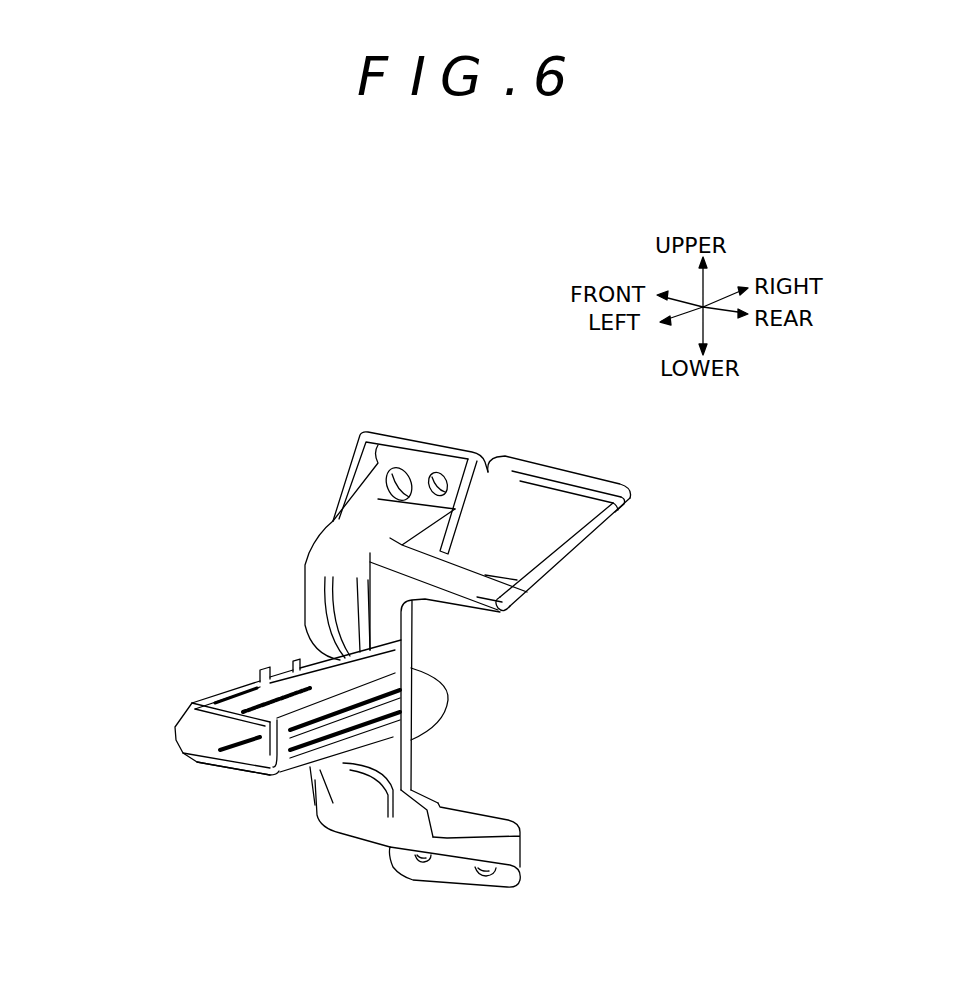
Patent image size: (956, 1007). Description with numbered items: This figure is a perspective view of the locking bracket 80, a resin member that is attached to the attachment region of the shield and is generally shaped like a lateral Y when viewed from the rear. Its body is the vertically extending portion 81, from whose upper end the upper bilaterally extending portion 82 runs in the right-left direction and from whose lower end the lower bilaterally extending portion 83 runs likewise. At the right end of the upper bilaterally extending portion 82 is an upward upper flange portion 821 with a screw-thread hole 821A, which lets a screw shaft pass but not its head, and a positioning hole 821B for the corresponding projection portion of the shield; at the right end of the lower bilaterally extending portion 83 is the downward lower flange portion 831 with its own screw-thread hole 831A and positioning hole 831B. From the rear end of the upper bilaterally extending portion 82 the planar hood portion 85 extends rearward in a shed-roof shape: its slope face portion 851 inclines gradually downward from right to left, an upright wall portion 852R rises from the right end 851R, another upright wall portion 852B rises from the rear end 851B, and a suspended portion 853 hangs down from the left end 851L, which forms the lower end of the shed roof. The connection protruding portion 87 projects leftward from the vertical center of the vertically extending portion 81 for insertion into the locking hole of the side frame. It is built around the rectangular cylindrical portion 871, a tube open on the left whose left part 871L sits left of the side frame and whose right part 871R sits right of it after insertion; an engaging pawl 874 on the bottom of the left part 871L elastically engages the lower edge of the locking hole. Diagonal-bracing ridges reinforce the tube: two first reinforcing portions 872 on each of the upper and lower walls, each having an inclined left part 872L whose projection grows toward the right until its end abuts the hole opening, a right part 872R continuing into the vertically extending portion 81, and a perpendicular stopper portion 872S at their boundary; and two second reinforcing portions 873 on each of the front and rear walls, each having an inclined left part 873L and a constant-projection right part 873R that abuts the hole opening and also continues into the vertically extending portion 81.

The locking bracket 80 is at (541, 681).
The vertically extending portion 81 is at (362, 795).
The bilaterally extending portion 82 is at (337, 540).
The upper flange portion 821 is at (415, 460).
The screw-thread hole 821A is at (448, 457).
The positioning hole 821B is at (392, 458).
The bilaterally extending portion 83 is at (477, 850).
The lower flange portion 831 is at (447, 870).
The screw-thread hole 831A is at (423, 865).
The positioning hole 831B is at (493, 885).
The hood portion 85 is at (585, 548).
The slope face portion 851 is at (567, 522).
The right end of the slope face portion 851R is at (533, 480).
The left end of the slope face portion 851L is at (530, 593).
The rear end of the slope face portion 851B is at (628, 520).
The upright wall portion 852R is at (571, 480).
The upright wall portion 852B is at (632, 499).
The suspended portion 853 is at (508, 614).
The connection protruding portion 87 is at (176, 735).
The rectangular cylindrical portion 871 is at (193, 728).
The left part of the rectangular cylindrical portion 871L is at (213, 692).
The right part of the rectangular cylindrical portion 871R is at (416, 645).
The first reinforcing portion 872 is at (307, 660).
The right part of the first reinforcing portion 872R is at (325, 607).
The left part of the first reinforcing portion 872L is at (222, 690).
The stopper portion 872S is at (257, 690).
The second reinforcing portion 873 is at (415, 685).
The left part of the second reinforcing portion 873L is at (287, 735).
The right part of the second reinforcing portion 873R is at (413, 702).
The engaging pawl 874 is at (228, 768).